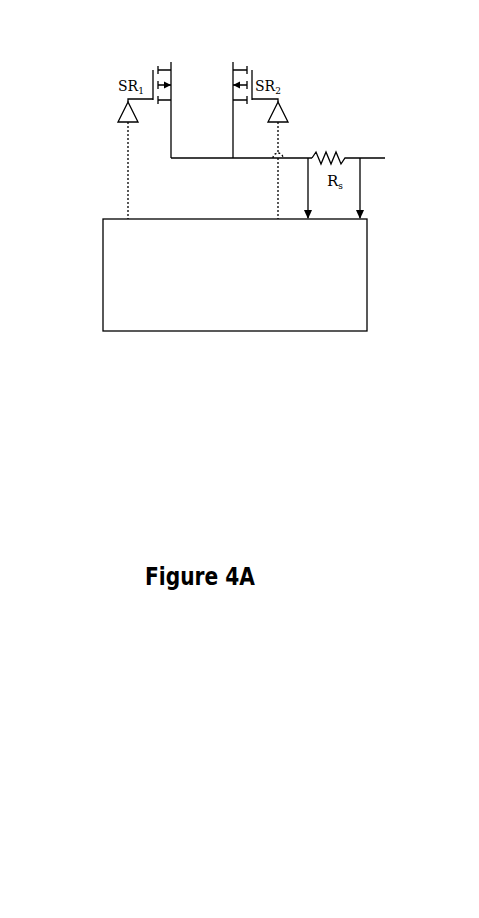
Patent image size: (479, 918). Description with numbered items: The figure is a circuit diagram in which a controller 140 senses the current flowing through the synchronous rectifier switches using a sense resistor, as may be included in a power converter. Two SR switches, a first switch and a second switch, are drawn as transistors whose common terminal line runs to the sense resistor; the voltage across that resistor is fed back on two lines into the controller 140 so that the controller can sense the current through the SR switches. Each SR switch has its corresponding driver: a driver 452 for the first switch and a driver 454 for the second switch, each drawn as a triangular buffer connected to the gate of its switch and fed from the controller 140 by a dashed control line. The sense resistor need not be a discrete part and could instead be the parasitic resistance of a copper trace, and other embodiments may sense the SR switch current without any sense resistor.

The driver 452 is at (101, 159).
The driver 454 is at (302, 159).
The controller 140 is at (235, 291).